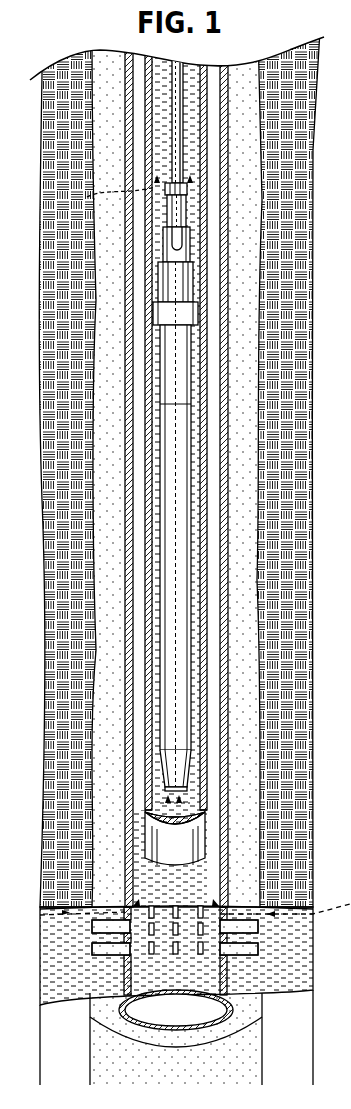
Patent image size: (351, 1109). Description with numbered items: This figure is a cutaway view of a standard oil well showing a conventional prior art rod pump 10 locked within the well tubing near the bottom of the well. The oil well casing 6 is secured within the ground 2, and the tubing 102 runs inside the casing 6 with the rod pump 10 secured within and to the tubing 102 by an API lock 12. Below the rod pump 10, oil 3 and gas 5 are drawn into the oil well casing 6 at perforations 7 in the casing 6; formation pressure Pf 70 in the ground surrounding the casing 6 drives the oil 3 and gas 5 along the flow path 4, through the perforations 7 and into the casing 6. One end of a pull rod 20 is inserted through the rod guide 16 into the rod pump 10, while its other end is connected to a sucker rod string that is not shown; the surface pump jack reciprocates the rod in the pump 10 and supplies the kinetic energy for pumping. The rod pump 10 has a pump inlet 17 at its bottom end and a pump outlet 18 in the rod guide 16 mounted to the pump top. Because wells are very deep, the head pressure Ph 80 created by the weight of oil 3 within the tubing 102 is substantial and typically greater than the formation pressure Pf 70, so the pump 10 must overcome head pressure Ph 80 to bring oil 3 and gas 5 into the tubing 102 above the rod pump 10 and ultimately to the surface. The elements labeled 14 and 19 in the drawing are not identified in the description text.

The ground 2 is at (40, 825).
The oil 3 is at (70, 978).
The flow path 4 is at (86, 195).
The gas 5 is at (50, 978).
The oil well casing 6 is at (228, 528).
The perforations 7 is at (152, 957).
The rod pump 10 is at (191, 483).
The API lock 12 is at (198, 313).
The downhole pump 14 is at (193, 298).
The rod guide 16 is at (190, 218).
The pump inlet 17 is at (183, 792).
The pump outlet 18 is at (165, 247).
The cement 19 is at (240, 573).
The pull rod 20 is at (183, 112).
The formation pressure Pf 70 is at (192, 888).
The head pressure Ph 80 is at (205, 69).
The tubing 102 is at (207, 627).